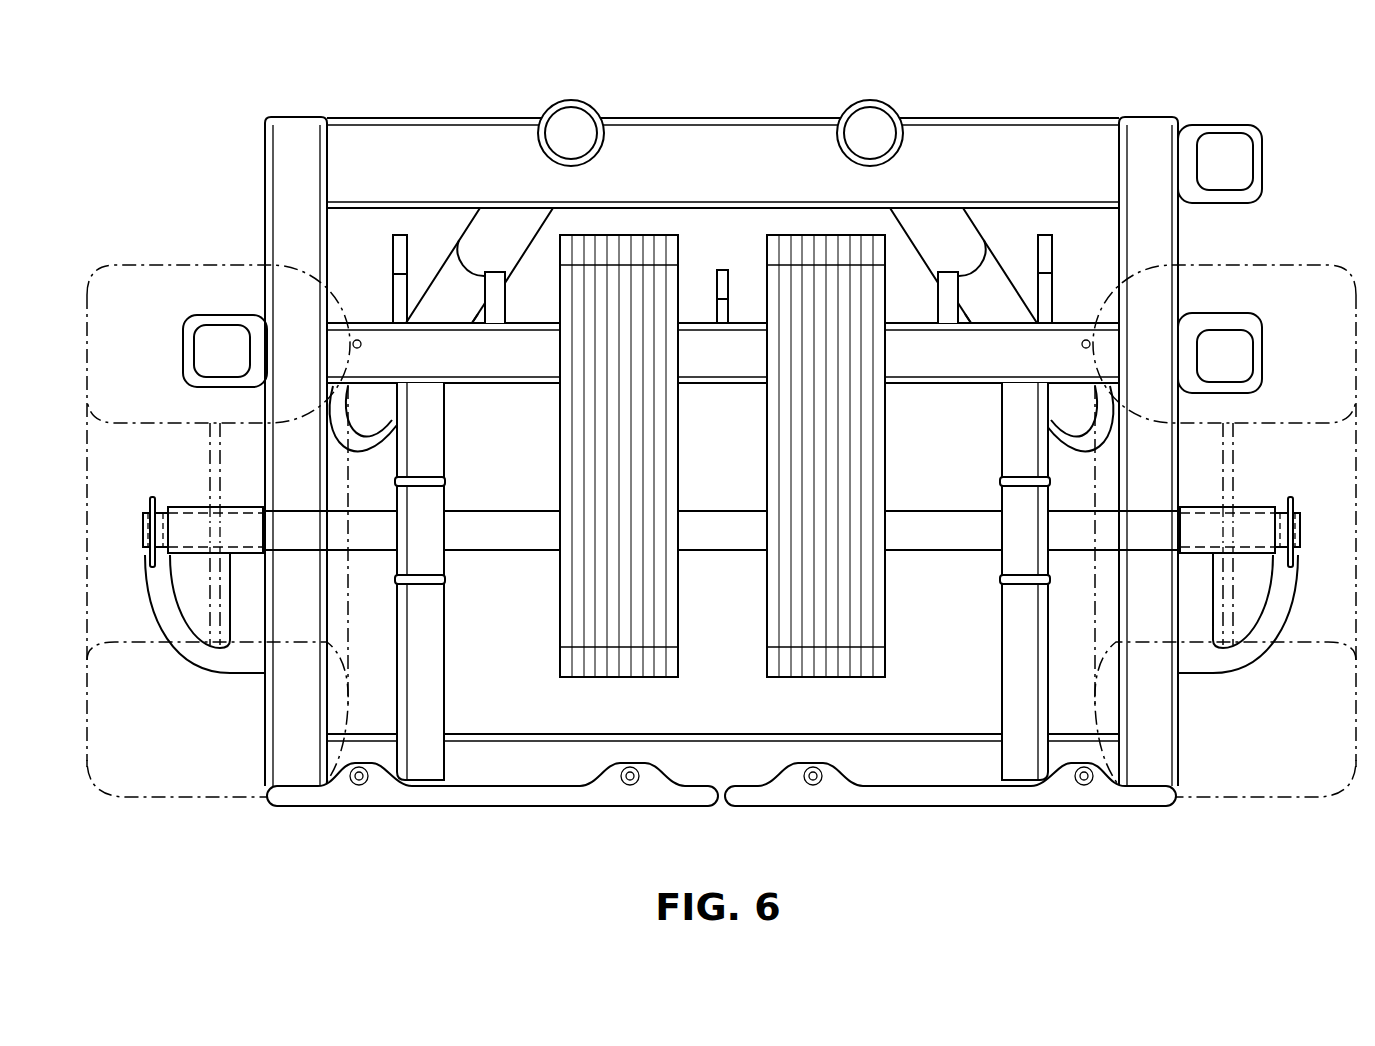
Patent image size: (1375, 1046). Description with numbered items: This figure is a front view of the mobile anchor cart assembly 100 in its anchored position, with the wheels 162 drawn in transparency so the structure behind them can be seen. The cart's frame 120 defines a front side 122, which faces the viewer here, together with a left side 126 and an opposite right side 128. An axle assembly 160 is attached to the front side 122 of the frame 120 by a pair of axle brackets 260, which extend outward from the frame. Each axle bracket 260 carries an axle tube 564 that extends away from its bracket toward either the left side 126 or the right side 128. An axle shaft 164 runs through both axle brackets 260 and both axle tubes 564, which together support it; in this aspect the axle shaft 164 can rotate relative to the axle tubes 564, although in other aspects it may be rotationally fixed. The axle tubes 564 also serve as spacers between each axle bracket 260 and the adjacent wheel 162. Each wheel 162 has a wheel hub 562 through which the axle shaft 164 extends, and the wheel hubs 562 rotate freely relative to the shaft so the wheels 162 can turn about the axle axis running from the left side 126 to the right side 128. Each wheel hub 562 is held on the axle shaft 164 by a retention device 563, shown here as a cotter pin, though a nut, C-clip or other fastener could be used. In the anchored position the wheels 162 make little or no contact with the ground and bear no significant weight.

The mobile anchor cart assembly 100 is at (690, 68).
The frame 120 is at (1010, 138).
The front side 122 is at (525, 768).
The left side 126 is at (1175, 230).
The right side 128 is at (265, 188).
The axle assembly 160 is at (1330, 285).
The wheel 162 is at (185, 783).
The axle shaft 164 is at (925, 535).
The axle bracket 260 is at (428, 747).
The wheel hub 562 is at (204, 510).
The retention device 563 is at (150, 498).
The axle tube 564 is at (370, 535).